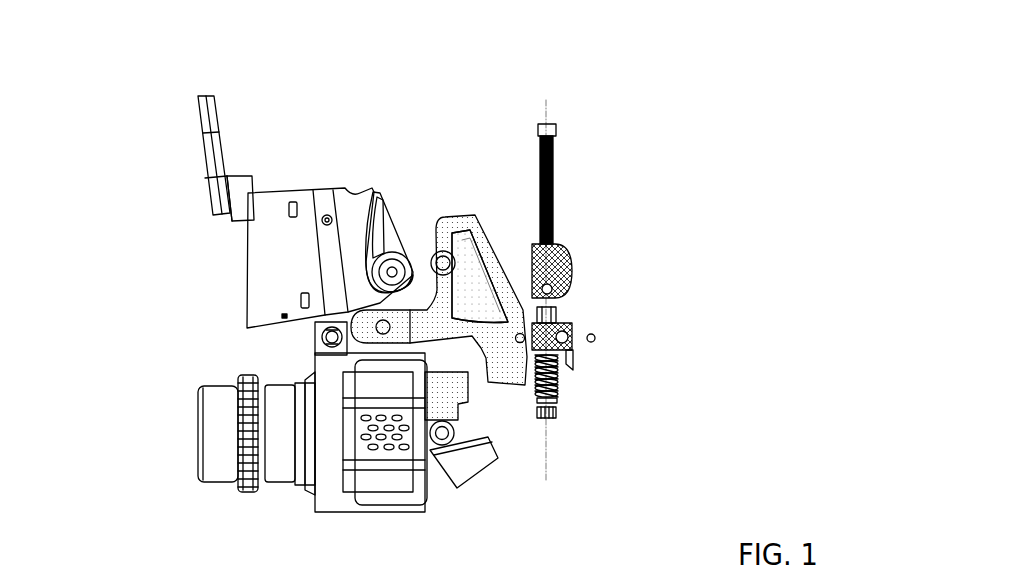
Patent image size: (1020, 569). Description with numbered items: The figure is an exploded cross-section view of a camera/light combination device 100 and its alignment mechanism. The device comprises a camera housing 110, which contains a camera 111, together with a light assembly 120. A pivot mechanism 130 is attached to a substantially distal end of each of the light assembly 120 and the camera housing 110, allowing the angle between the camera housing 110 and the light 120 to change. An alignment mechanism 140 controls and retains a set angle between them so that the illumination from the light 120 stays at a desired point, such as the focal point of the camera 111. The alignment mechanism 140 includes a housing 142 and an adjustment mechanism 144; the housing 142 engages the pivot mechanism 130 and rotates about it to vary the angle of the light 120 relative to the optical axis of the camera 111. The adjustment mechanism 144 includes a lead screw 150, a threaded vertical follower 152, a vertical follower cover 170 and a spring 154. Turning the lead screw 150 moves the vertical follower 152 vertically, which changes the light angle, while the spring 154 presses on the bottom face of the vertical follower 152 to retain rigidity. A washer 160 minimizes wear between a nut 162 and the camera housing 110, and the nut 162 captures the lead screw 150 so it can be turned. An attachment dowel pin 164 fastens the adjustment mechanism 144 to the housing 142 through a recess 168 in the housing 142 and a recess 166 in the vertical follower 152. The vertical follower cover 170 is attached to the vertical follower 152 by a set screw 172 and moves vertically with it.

The camera/light combination device 100 is at (283, 57).
The camera housing 110 is at (197, 412).
The camera 111 is at (197, 466).
The light assembly 120 is at (232, 262).
The pivot mechanism 130 is at (312, 342).
The alignment mechanism 140 is at (458, 138).
The housing 142 is at (440, 210).
The adjustment mechanism 144 is at (555, 90).
The lead screw 150 is at (551, 126).
The vertical follower 152 is at (583, 363).
The spring 154 is at (562, 390).
The washer 160 is at (554, 400).
The nut 162 is at (551, 416).
The attachment (dowel) pin 164 is at (594, 333).
The recess 166 is at (565, 334).
The recess 168 is at (519, 345).
The vertical follower cover 170 is at (556, 262).
The set screw 172 is at (490, 308).